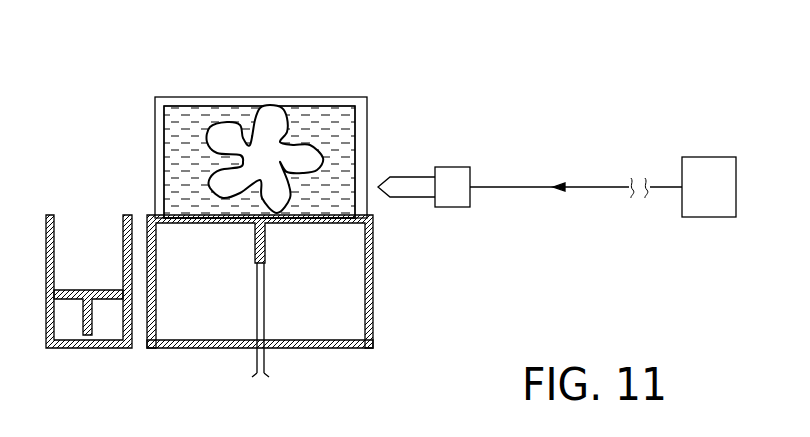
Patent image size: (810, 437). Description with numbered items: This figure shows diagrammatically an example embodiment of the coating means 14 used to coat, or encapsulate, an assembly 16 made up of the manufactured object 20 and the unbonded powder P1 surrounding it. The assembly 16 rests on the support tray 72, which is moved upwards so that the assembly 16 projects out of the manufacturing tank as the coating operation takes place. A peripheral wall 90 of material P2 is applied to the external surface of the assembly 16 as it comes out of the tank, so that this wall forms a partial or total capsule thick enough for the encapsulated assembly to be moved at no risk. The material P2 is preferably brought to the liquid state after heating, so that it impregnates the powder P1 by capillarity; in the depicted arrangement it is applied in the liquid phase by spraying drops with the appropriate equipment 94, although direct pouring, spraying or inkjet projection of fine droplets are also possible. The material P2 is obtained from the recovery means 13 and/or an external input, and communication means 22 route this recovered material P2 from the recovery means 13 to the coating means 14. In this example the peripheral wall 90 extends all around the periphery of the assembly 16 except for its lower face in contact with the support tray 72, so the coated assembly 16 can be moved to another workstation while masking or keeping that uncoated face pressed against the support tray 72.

The recovery means 13 is at (708, 205).
The coating means 14 is at (420, 224).
The assembly 16 is at (330, 104).
The object 20 is at (265, 113).
The communication means 22 is at (610, 187).
The support tray 72 is at (257, 322).
The peripheral wall 90 is at (182, 102).
The spraying equipment 94 is at (467, 173).
The unbonded powder P1 is at (340, 133).
The recovered material P2 is at (582, 150).